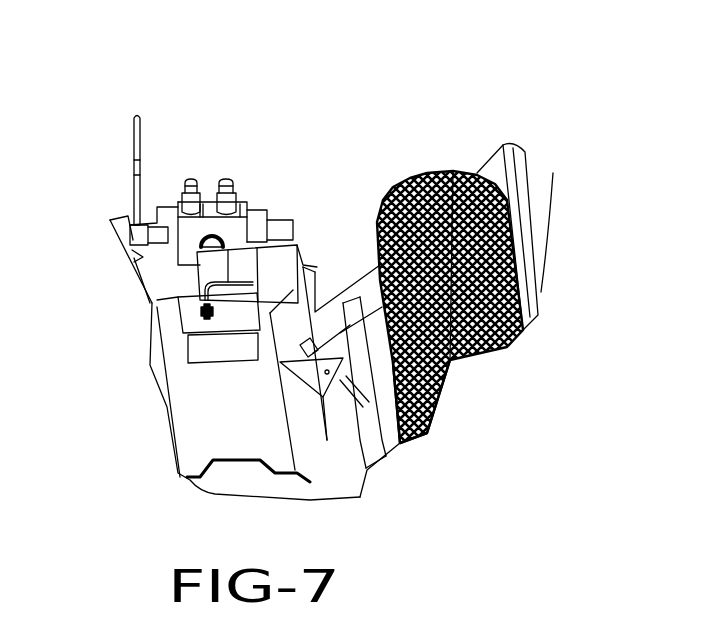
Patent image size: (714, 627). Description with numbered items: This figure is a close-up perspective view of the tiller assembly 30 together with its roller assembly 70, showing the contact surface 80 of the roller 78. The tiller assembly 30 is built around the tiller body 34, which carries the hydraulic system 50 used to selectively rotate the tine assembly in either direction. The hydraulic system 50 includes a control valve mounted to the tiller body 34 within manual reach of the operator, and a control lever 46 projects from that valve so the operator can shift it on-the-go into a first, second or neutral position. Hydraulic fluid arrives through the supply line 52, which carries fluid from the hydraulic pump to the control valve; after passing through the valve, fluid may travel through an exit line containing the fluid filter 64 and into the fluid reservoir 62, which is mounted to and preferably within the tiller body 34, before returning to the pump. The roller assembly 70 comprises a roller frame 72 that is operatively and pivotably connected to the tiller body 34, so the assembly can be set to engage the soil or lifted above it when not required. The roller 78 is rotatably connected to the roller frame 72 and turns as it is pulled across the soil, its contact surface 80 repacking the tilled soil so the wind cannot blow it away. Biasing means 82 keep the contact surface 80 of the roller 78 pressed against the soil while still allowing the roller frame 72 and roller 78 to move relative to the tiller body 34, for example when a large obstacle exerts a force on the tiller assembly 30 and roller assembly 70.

The tiller assembly 30 is at (313, 166).
The tiller body 34 is at (368, 470).
The control lever 46 is at (141, 130).
The hydraulic system 50 is at (372, 116).
The supply line 52 is at (127, 223).
The fluid reservoir 62 is at (233, 315).
The fluid filter 64 is at (273, 277).
The roller assembly 70 is at (455, 116).
The roller frame 72 is at (343, 305).
The roller 78 is at (423, 172).
The contact surface 80 is at (383, 203).
The biasing means 82 is at (459, 389).